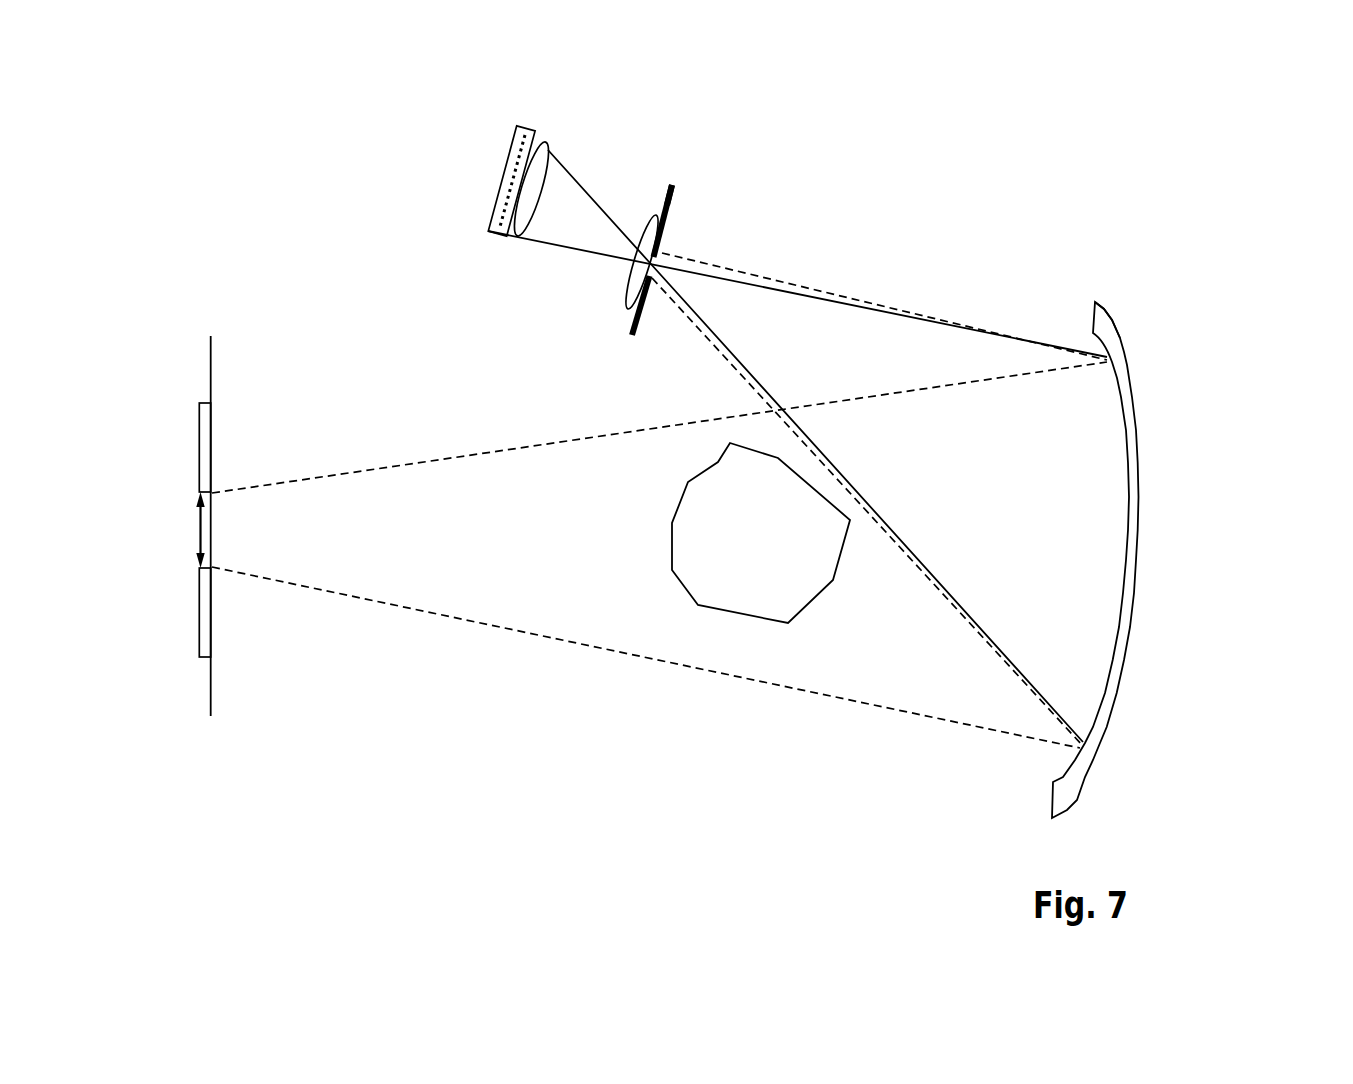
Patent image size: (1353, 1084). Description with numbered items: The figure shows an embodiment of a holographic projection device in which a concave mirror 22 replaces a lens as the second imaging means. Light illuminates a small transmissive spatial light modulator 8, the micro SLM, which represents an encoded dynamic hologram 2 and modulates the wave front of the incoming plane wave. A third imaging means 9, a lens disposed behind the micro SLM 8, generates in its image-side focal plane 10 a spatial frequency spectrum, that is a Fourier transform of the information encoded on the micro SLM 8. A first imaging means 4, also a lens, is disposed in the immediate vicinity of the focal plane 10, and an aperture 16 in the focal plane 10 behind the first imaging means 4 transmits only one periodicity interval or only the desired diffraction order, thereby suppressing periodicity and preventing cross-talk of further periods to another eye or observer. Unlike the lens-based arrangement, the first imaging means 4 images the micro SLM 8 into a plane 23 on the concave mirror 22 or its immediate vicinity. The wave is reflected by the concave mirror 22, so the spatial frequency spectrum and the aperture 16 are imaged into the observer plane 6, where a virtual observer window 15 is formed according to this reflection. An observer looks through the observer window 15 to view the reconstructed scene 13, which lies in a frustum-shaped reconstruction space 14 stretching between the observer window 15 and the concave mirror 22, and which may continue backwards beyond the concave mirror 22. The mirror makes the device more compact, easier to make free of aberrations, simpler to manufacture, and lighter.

The encoded dynamic hologram 2 is at (488, 232).
The first imaging means 4 is at (647, 232).
The observer plane 6 is at (205, 546).
The transmissive spatial light modulator 8 is at (503, 177).
The third imaging means 9 is at (523, 210).
The focal plane 10 is at (672, 182).
The scene 13 is at (720, 535).
The reconstruction space 14 is at (418, 535).
The observer window 15 is at (175, 515).
The aperture 16 is at (674, 195).
The concave mirror 22 is at (1070, 785).
The plane 23 is at (1108, 300).